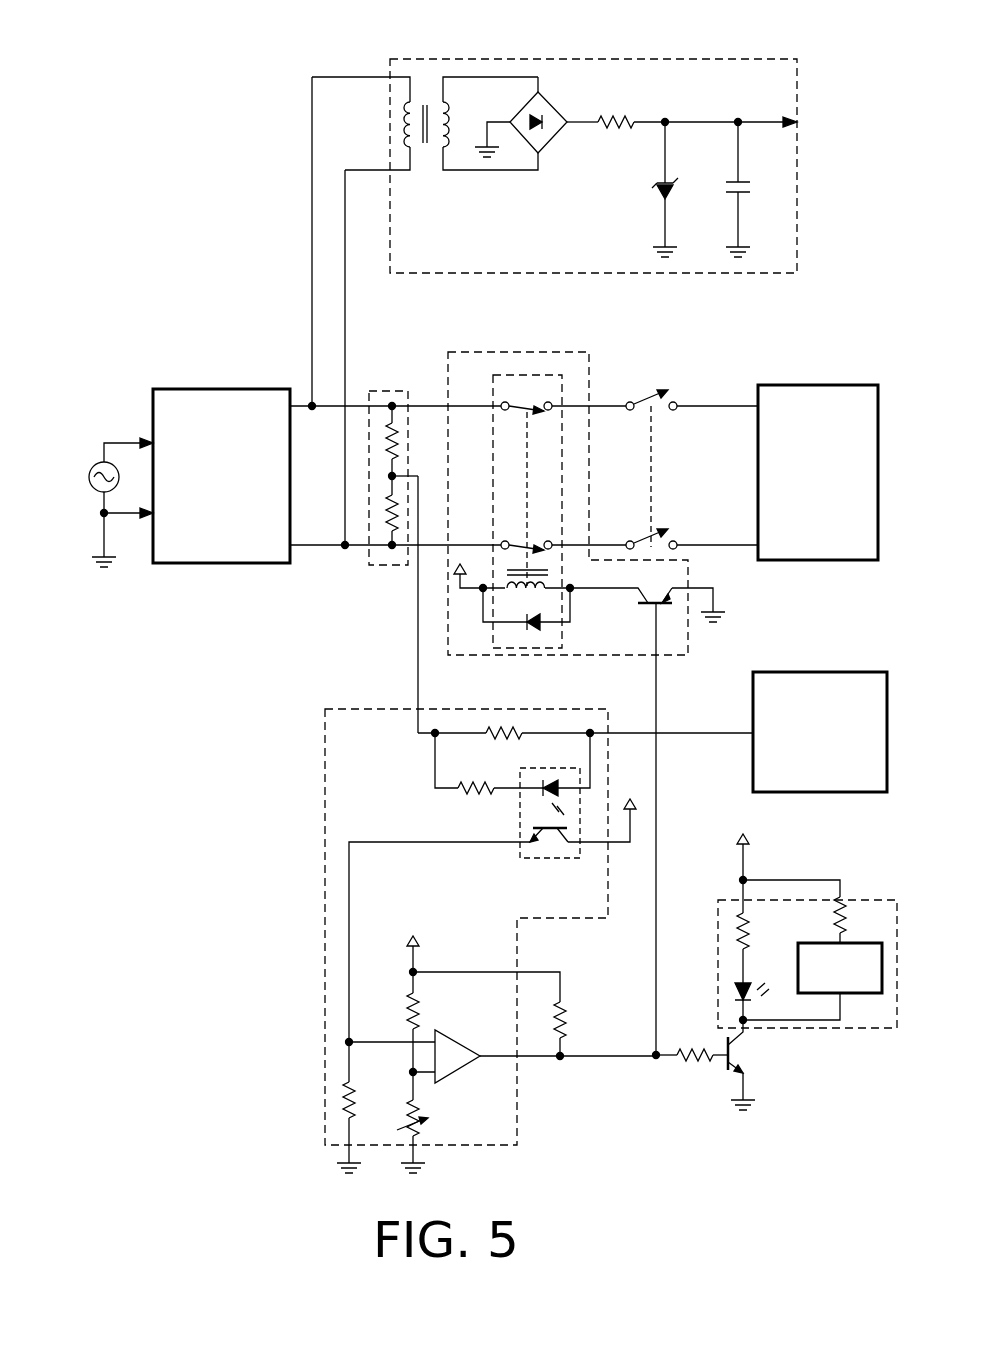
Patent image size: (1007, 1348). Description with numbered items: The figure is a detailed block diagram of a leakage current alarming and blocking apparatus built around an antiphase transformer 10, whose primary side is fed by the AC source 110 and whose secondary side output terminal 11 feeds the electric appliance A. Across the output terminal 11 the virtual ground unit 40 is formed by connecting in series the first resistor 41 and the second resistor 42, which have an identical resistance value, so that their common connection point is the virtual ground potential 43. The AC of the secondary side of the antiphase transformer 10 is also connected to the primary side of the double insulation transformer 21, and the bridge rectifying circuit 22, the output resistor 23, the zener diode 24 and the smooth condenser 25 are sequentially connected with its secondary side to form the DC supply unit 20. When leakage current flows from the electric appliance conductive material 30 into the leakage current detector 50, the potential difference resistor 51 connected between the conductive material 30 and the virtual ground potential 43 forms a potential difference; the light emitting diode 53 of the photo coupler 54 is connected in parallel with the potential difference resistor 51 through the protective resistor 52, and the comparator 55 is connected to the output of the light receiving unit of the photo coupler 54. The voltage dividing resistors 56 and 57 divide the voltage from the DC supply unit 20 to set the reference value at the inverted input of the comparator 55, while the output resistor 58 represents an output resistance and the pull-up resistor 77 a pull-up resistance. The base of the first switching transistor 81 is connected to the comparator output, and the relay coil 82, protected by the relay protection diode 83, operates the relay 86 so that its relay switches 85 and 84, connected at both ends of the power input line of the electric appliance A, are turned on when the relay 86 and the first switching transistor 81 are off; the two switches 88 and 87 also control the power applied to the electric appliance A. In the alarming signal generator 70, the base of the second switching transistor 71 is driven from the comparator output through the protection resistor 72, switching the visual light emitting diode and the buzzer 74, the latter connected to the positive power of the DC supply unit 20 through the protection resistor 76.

The antiphase transformer 10 is at (187, 389).
The output terminal 11 is at (297, 410).
The DC supply unit 20 is at (733, 59).
The double insulation transformer T 21 is at (433, 78).
The bridge rectifying circuit BD 22 is at (548, 94).
The output resistor R3 23 is at (625, 118).
The zener diode ZR 24 is at (657, 186).
The smooth condenser C 25 is at (752, 182).
The electric appliance conductive material 30 is at (753, 755).
The virtual ground unit 40 is at (368, 552).
The first resistor R1 41 is at (390, 430).
The second resistor R2 42 is at (392, 535).
The virtual ground potential G 43 is at (394, 476).
The leakage current detector 50 is at (325, 892).
The resistor R4 51 is at (485, 731).
The protective resistor R5 52 is at (462, 797).
The LED of the photo coupler PC 53 is at (540, 795).
The photo coupler PC 54 is at (550, 830).
The comparator COMP 55 is at (460, 1040).
The voltage dividing resistor R6 56 is at (410, 997).
The voltage dividing resistor R7 57 is at (418, 1135).
The resistor R10 58 is at (350, 1085).
The alarming signal generator 70 is at (832, 1028).
The second switching transistor TR2 71 is at (730, 1067).
The protection resistor R12 72 is at (677, 1060).
The buzzer BZ 74 is at (862, 993).
The protection resistor R9 76 is at (843, 897).
The resistor R11 77 is at (562, 1003).
The first switching transistor TR1 81 is at (663, 607).
The relay coil RC 82 is at (537, 562).
The diode D 83 is at (540, 624).
The relay switch RSW2 84 is at (535, 542).
The relay switch RSW1 85 is at (525, 410).
The relay RL 86 is at (538, 352).
The switch SW2 87 is at (653, 527).
The switch SW1 88 is at (640, 392).
The electric appliance A is at (853, 385).
The AC power source 110 is at (99, 502).